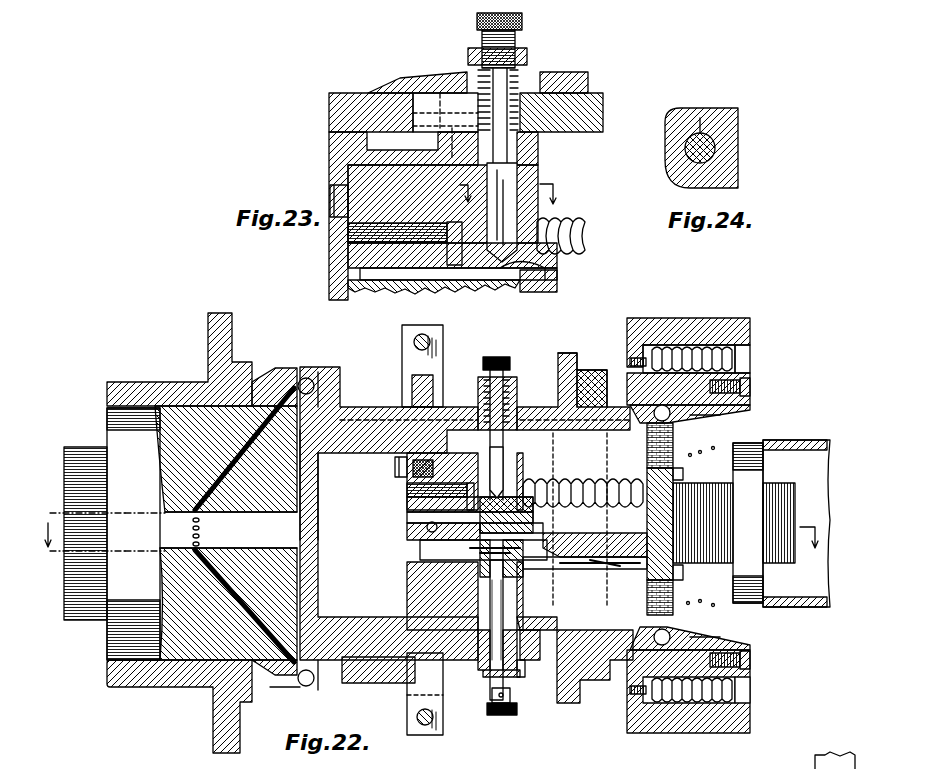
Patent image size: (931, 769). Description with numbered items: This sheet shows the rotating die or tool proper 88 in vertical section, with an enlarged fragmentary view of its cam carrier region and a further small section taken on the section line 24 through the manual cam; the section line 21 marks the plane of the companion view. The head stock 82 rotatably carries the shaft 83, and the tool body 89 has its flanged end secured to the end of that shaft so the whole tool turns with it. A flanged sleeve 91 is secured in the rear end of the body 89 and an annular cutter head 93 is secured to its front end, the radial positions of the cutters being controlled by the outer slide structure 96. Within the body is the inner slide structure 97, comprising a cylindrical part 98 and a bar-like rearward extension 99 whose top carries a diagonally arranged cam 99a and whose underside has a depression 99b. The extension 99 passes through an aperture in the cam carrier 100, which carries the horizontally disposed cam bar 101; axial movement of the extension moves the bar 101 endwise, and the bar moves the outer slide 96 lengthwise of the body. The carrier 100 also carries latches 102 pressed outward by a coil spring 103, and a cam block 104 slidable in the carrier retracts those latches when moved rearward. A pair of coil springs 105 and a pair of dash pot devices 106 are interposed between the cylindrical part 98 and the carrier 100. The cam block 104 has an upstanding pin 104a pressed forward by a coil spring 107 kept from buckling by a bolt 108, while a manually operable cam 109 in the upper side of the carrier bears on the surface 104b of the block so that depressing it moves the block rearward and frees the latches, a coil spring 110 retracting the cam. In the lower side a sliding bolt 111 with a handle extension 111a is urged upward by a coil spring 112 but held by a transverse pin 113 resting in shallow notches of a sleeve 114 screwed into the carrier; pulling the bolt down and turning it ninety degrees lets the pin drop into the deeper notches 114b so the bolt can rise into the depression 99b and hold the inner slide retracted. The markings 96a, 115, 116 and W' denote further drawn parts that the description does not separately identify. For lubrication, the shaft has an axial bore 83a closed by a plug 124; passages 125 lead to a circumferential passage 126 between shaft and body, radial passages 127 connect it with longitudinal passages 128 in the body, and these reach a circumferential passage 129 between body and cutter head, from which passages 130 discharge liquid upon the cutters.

In FIG. 22, the section line 21— 21 is at (429, 528).
In FIG. 23, the section line 24— 24 is at (511, 190).
In FIG. 22, the head stock 82 is at (205, 345).
In FIG. 22, the shaft 83 is at (130, 626).
In FIG. 22, the axial bore 83a is at (160, 540).
In FIG. 22, the die or tool proper 88 is at (650, 312).
In FIG. 23, the tool body 89 is at (329, 97).
In FIG. 22, the tool body 89 is at (355, 405).
In FIG. 23, the flanged sleeve 91 is at (329, 145).
In FIG. 22, the flanged sleeve 91 is at (335, 453).
In FIG. 22, the annular cutter head 93 is at (750, 410).
In FIG. 23, the outer slide structure 96 is at (585, 72).
In FIG. 22, the outer slide structure 96 is at (568, 370).
In FIG. 22, the lower flange block 96a is at (407, 680).
In FIG. 22, the inner slide structure 97 is at (642, 517).
In FIG. 22, the cylindrical part 98 is at (647, 600).
In FIG. 22, the bar-like rearward extension 99 is at (570, 570).
In FIG. 22, the diagonally arranged cam 99a is at (552, 540).
In FIG. 22, the depression 99b is at (592, 570).
In FIG. 23, the cam carrier 100 is at (440, 93).
In FIG. 24, the cam carrier 100 is at (738, 138).
In FIG. 22, the cam carrier 100 is at (407, 573).
In FIG. 23, the cam bar 101 is at (528, 292).
In FIG. 22, the cam bar 101 is at (510, 526).
In FIG. 23, the latches 102 is at (385, 290).
In FIG. 22, the latches 102 is at (425, 527).
In FIG. 22, the coil spring 103 is at (420, 546).
In FIG. 23, the cam block 104 is at (360, 275).
In FIG. 22, the cam block 104 is at (407, 504).
In FIG. 23, the upstanding pin 104a is at (480, 280).
In FIG. 22, the upstanding pin 104a is at (420, 516).
In FIG. 23, the surface of cam block 104b is at (525, 282).
In FIG. 22, the surface of cam block 104b is at (520, 500).
In FIG. 23, the coil springs 105 is at (575, 225).
In FIG. 22, the coil springs 105 is at (578, 484).
In FIG. 22, the dash pot devices 106 is at (523, 570).
In FIG. 23, the coil spring 107 is at (355, 255).
In FIG. 22, the coil spring 107 is at (395, 471).
In FIG. 23, the bolt 108 is at (348, 232).
In FIG. 22, the bolt 108 is at (407, 490).
In FIG. 23, the manually operable cam 109 is at (517, 185).
In FIG. 24, the manually operable cam 109 is at (706, 118).
In FIG. 22, the manually operable cam 109 is at (505, 470).
In FIG. 23, the coil spring 110 is at (522, 100).
In FIG. 22, the coil spring 110 is at (512, 378).
In FIG. 22, the sliding bolt 111 is at (505, 600).
In FIG. 22, the handle extension 111a is at (512, 716).
In FIG. 22, the coil spring 112 is at (520, 660).
In FIG. 22, the transverse pin 113 is at (492, 695).
In FIG. 22, the sleeve 114 is at (483, 673).
In FIG. 22, the deeper notches 114b is at (522, 680).
In FIG. 22, the coupling nut 115 is at (748, 605).
In FIG. 22, the lug 116 is at (440, 332).
In FIG. 22, the plug 124 is at (300, 540).
In FIG. 22, the passages 125 is at (266, 378).
In FIG. 22, the circumferential passage 126 is at (305, 376).
In FIG. 22, the radial passages 127 is at (332, 372).
In FIG. 23, the longitudinal passages 128 is at (598, 98).
In FIG. 22, the longitudinal passages 128 is at (378, 420).
In FIG. 22, the circumferential passage 129 is at (675, 420).
In FIG. 22, the passages 130 is at (748, 425).
In FIG. 22, the pipe W' is at (796, 506).